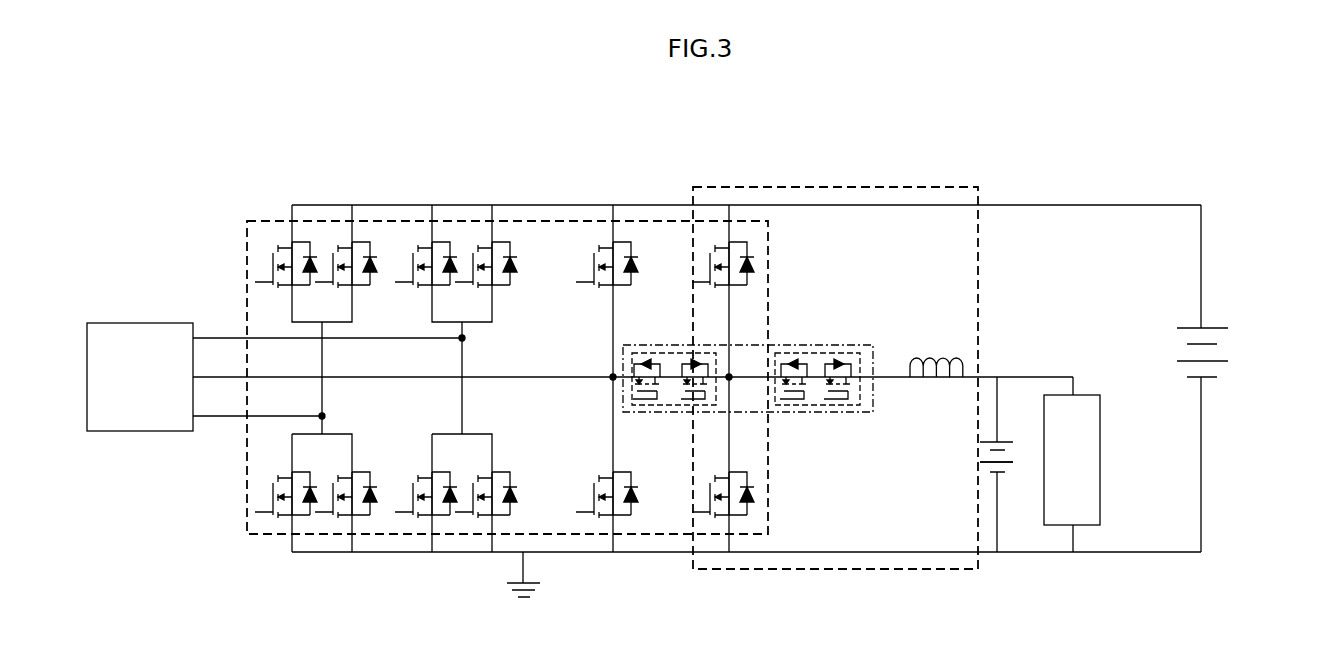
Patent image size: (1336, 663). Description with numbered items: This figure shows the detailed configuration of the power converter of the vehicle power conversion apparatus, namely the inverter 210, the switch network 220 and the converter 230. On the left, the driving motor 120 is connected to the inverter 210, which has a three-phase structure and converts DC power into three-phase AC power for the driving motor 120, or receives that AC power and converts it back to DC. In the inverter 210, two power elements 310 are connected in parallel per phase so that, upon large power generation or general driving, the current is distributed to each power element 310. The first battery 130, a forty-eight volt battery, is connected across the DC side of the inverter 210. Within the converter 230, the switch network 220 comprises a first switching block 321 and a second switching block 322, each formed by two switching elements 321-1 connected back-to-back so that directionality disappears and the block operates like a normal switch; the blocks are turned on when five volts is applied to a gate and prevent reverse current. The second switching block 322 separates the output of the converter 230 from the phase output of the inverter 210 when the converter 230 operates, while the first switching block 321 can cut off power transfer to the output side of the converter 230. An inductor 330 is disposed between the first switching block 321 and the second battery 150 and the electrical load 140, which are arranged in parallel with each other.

The driving motor 120 is at (137, 320).
The first battery 130 is at (1229, 362).
The electrical load 140 is at (1078, 395).
The second battery 150 is at (1014, 465).
The inverter 210 is at (507, 348).
The switch network 220 is at (756, 389).
The converter 230 is at (818, 341).
The power element 310 is at (300, 242).
The first switching block 321 is at (832, 430).
The switching element 321-1 is at (838, 412).
The second switching block 322 is at (663, 412).
The inductor 330 is at (940, 358).